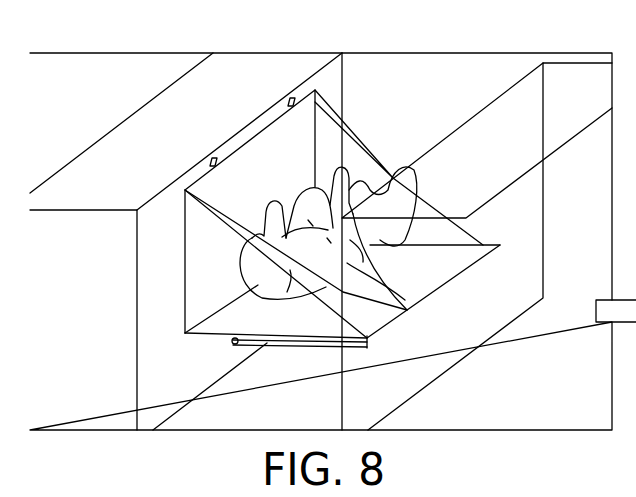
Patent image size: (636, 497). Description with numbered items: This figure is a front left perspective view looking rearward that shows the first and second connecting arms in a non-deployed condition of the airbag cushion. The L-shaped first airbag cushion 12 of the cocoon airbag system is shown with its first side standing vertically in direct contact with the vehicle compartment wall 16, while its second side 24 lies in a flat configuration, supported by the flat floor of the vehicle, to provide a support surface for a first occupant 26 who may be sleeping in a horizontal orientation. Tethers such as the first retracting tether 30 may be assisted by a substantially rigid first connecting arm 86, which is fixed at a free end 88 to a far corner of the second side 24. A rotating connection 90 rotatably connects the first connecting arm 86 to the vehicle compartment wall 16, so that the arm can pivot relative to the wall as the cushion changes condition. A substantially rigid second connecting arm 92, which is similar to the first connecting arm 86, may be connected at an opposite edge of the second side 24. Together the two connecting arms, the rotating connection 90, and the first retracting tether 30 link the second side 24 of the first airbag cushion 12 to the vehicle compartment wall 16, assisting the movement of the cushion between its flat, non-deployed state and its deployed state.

The first airbag cushion 12 is at (421, 84).
The vehicle compartment wall 16 is at (167, 377).
The second side 24 is at (432, 268).
The first occupant 26 is at (407, 310).
The first retracting tether 30 is at (219, 217).
The first connecting arm 86 is at (283, 346).
The free end 88 is at (369, 347).
The rotating connection 90 is at (231, 343).
The second connecting arm 92 is at (437, 243).